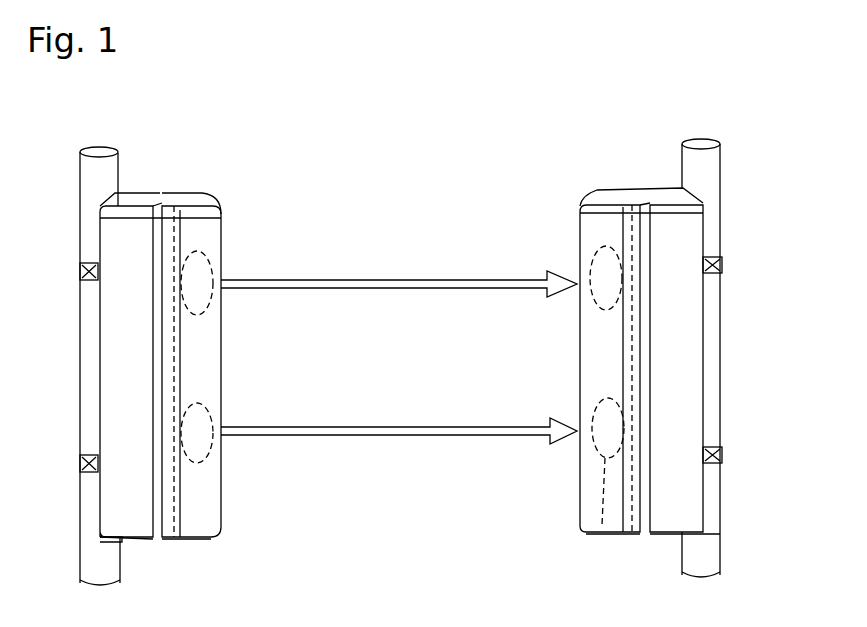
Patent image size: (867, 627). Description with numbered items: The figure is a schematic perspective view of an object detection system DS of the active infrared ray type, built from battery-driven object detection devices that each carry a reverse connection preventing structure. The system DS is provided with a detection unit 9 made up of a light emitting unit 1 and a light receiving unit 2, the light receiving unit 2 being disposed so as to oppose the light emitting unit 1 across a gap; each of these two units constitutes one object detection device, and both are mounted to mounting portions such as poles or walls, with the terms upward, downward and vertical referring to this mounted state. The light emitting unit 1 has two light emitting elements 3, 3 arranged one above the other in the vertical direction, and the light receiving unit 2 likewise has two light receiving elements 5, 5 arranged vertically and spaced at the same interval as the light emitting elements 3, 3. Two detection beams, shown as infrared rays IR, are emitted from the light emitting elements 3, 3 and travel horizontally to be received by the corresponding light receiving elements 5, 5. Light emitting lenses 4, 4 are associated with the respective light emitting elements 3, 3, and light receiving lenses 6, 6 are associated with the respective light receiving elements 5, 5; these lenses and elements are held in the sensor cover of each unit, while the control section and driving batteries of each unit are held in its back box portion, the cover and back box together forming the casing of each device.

The light emitting unit 1 is at (162, 372).
The light receiving unit 2 is at (651, 363).
The light emitting element 3 is at (171, 200).
The light emitting lens 4 is at (222, 242).
The light receiving element 5 is at (630, 200).
The light receiving lens 6 is at (577, 238).
The detection unit 9 is at (467, 160).
The infrared ray IR is at (399, 376).
The object detection system DS is at (840, 284).